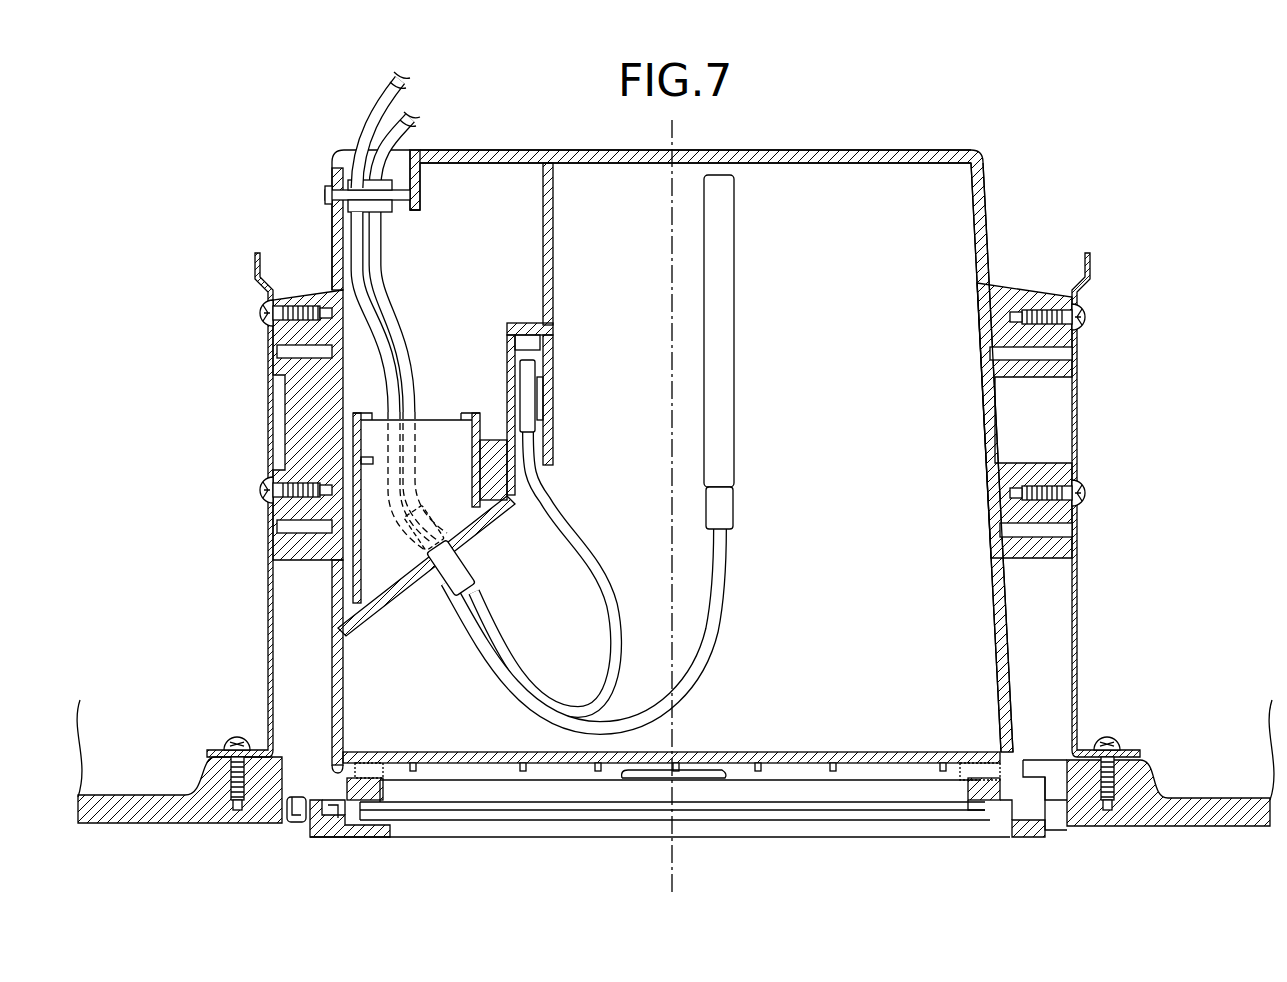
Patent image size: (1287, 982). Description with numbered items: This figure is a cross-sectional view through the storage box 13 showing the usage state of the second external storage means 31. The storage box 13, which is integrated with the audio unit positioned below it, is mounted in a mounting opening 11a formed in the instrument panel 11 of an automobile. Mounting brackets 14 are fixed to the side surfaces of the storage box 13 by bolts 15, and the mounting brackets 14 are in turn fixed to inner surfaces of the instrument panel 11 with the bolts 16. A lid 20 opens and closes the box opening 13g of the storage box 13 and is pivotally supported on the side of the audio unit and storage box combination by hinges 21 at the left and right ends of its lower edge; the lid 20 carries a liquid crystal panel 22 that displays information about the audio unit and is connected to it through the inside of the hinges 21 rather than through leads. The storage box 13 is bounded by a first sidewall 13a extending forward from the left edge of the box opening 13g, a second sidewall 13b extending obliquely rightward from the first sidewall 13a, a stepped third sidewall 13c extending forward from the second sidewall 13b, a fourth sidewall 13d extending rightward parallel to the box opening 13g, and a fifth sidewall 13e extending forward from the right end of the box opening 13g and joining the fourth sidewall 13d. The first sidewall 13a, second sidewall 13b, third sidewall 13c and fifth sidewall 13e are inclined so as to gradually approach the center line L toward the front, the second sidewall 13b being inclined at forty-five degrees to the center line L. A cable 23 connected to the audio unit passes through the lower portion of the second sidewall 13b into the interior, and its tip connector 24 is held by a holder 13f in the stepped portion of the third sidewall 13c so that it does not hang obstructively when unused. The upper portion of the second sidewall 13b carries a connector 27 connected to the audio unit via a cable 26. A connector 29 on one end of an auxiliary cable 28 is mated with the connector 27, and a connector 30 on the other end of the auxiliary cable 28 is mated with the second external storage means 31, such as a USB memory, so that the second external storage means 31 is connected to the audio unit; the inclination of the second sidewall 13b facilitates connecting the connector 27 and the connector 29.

The instrument panel 11 is at (675, 804).
The mounting opening 11a is at (1045, 812).
The storage box 13 is at (699, 520).
The first sidewall 13a is at (345, 708).
The second sidewall 13b is at (408, 597).
The third sidewall 13c is at (553, 250).
The fourth sidewall 13d is at (800, 164).
The fifth sidewall 13e is at (1000, 512).
The holder 13f is at (553, 378).
The box opening 13g is at (296, 822).
The mounting bracket 14 is at (270, 425).
The bolt 15 is at (262, 317).
The bolt 16 is at (237, 740).
The lid 20 is at (677, 788).
The hinge 21 is at (383, 777).
The liquid crystal panel 22 is at (587, 820).
The cable 23 is at (380, 338).
The connector 24 is at (532, 400).
The cable 26 is at (405, 350).
The connector 27 is at (428, 522).
The auxiliary cable 28 is at (724, 645).
The connector 29 is at (467, 573).
The connector 30 is at (722, 505).
The second external storage means 31 is at (722, 352).
The center line L is at (668, 575).